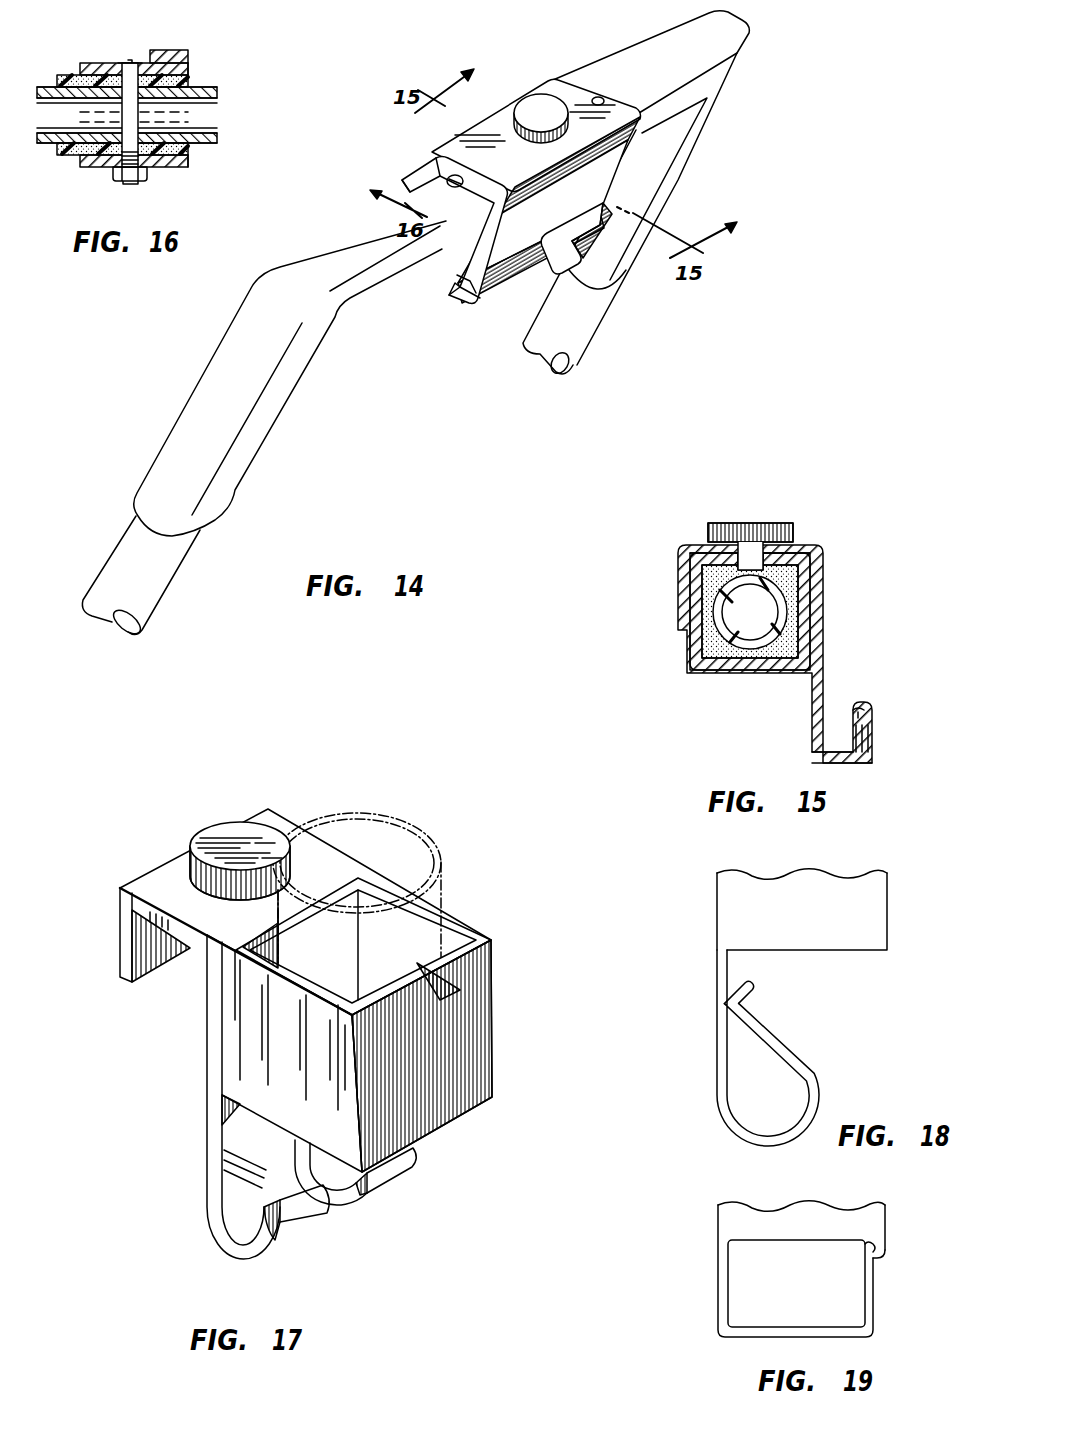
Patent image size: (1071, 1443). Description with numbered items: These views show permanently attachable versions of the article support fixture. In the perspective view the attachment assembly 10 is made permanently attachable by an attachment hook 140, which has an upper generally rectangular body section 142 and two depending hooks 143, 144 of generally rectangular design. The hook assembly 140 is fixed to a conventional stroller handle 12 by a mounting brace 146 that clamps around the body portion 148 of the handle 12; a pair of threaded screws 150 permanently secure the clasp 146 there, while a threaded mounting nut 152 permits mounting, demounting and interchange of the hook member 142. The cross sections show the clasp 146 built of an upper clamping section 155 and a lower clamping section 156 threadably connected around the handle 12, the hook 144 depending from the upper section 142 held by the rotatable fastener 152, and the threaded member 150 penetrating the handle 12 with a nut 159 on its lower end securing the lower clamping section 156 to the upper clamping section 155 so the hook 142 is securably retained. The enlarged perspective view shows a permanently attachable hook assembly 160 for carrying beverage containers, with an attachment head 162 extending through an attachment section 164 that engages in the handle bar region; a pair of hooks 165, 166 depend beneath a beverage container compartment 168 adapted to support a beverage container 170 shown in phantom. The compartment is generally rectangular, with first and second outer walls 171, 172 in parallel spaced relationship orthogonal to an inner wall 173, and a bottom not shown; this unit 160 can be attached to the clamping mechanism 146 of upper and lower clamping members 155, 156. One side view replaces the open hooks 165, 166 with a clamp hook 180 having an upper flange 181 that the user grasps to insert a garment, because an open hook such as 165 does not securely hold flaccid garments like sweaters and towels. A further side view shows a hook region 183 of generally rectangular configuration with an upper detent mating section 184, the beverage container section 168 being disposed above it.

In FIG. 14, the attachment assembly 10 is at (538, 63).
In FIG. 16, the handle 12 is at (217, 88).
In FIG. 14, the handle 12 is at (680, 190).
In FIG. 15, the handle 12 is at (824, 558).
In FIG. 14, the attachment hook 140 is at (518, 189).
In FIG. 16, the upper rectangular body section 142 is at (175, 50).
In FIG. 14, the upper rectangular body section 142 is at (484, 133).
In FIG. 15, the upper rectangular body section 142 is at (686, 548).
In FIG. 14, the depending hook 143 is at (466, 312).
In FIG. 14, the depending hook 144 is at (553, 268).
In FIG. 15, the depending hook 144 is at (873, 740).
In FIG. 16, the mounting brace 146 is at (190, 72).
In FIG. 14, the mounting brace 146 is at (432, 266).
In FIG. 15, the mounting brace 146 is at (740, 673).
In FIG. 14, the body portion of the handle 148 is at (334, 244).
In FIG. 16, the screw 150 is at (130, 62).
In FIG. 14, the screw 150 is at (601, 94).
In FIG. 14, the threaded mounting nut 152 is at (536, 106).
In FIG. 15, the threaded mounting nut 152 is at (762, 522).
In FIG. 16, the upper clamping section 155 is at (92, 63).
In FIG. 15, the upper clamping section 155 is at (690, 597).
In FIG. 16, the lower clamping section 156 is at (95, 167).
In FIG. 15, the lower clamping section 156 is at (692, 662).
In FIG. 16, the nut 159 is at (147, 176).
In FIG. 17, the permanently attachable hook assembly 160 is at (268, 808).
In FIG. 17, the attachment head 162 is at (232, 828).
In FIG. 17, the attachment section 164 is at (125, 938).
In FIG. 17, the hook 165 is at (300, 1235).
In FIG. 17, the hook 166 is at (400, 1192).
In FIG. 17, the beverage container compartment 168 is at (308, 1024).
In FIG. 18, the beverage container compartment 168 is at (870, 920).
In FIG. 19, the beverage container compartment 168 is at (877, 1222).
In FIG. 17, the beverage container 170 is at (440, 916).
In FIG. 17, the first outer wall 171 is at (304, 1065).
In FIG. 17, the second outer wall 172 is at (482, 933).
In FIG. 17, the inner wall 173 is at (480, 1030).
In FIG. 18, the clamp hook 180 is at (774, 1048).
In FIG. 18, the upper flange 181 is at (752, 992).
In FIG. 19, the hook region 183 is at (870, 1303).
In FIG. 19, the upper detent mating section 184 is at (885, 1247).